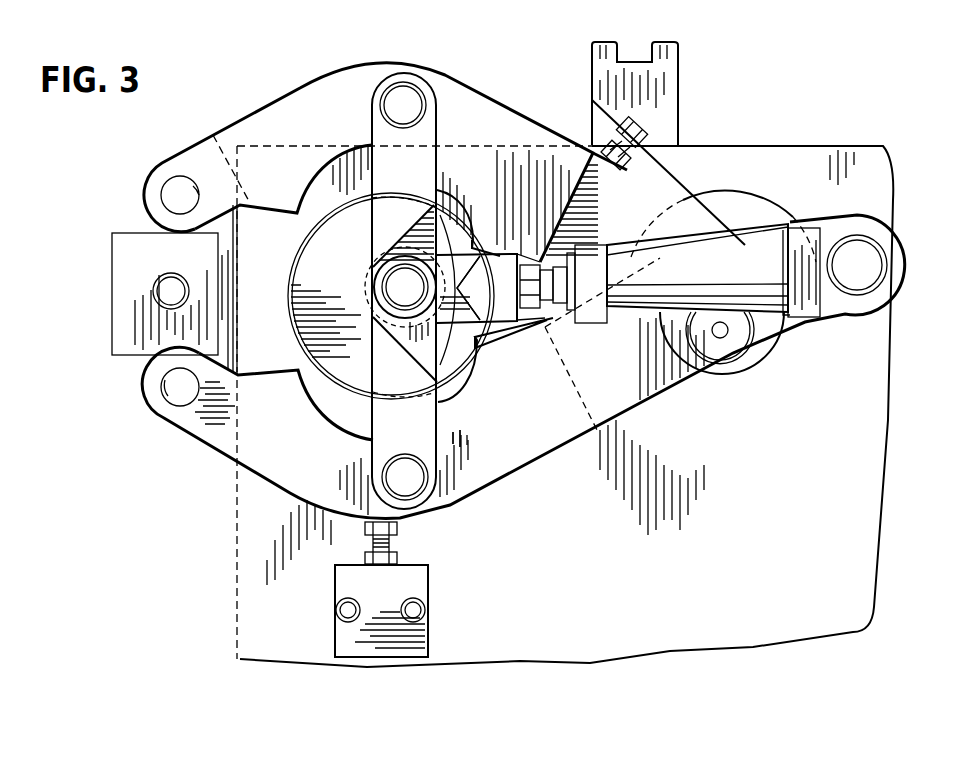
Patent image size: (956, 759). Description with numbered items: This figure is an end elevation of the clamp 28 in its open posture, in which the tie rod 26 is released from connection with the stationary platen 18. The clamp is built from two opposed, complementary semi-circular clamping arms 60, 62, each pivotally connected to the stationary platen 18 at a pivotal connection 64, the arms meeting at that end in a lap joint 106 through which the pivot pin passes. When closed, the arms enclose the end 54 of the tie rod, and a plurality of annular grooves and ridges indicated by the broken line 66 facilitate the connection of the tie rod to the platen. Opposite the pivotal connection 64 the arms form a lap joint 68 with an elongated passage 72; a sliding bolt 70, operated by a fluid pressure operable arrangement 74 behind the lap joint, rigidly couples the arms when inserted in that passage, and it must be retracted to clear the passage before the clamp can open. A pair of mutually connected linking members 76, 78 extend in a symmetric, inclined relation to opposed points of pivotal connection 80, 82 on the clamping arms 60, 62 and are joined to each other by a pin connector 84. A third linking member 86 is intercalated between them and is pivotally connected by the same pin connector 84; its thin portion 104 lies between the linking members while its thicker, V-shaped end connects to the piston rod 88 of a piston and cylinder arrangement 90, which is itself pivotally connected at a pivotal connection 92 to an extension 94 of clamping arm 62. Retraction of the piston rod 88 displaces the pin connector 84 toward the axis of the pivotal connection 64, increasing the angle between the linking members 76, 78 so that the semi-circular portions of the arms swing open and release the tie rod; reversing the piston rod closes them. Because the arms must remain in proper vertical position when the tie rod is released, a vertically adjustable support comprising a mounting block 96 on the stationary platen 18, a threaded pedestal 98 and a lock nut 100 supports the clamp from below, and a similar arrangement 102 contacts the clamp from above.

The stationary platen 18 is at (762, 526).
The tie rod 26 is at (292, 274).
The clamp 28 is at (437, 53).
The end of tie rod 54 is at (348, 285).
The clamping arm 60 is at (497, 174).
The clamping arm 62 is at (537, 423).
The pivotal connection 64 is at (733, 345).
The annular grooves and ridges 66 is at (473, 244).
The lap joint 68 is at (146, 190).
The sliding bolt 70 is at (179, 300).
The elongated passage 72 is at (193, 186).
The fluid pressure operable arrangement 74 is at (138, 296).
The linking member 76 is at (413, 181).
The linking member 78 is at (418, 419).
The pivotal connection 80 is at (411, 115).
The pivotal connection 82 is at (413, 487).
The pin connector 84 is at (413, 297).
The third linking member 86 is at (507, 290).
The piston rod 88 is at (540, 263).
The piston and cylinder arrangement 90 is at (725, 275).
The pivotal connection 92 is at (865, 275).
The extension 94 is at (769, 228).
The mounting block 96 is at (420, 640).
The threaded pedestal 98 is at (398, 528).
The lock nut 100 is at (398, 557).
The similar arrangement 102 is at (668, 86).
The thin portion 104 is at (458, 304).
The lap joint 106 is at (657, 205).